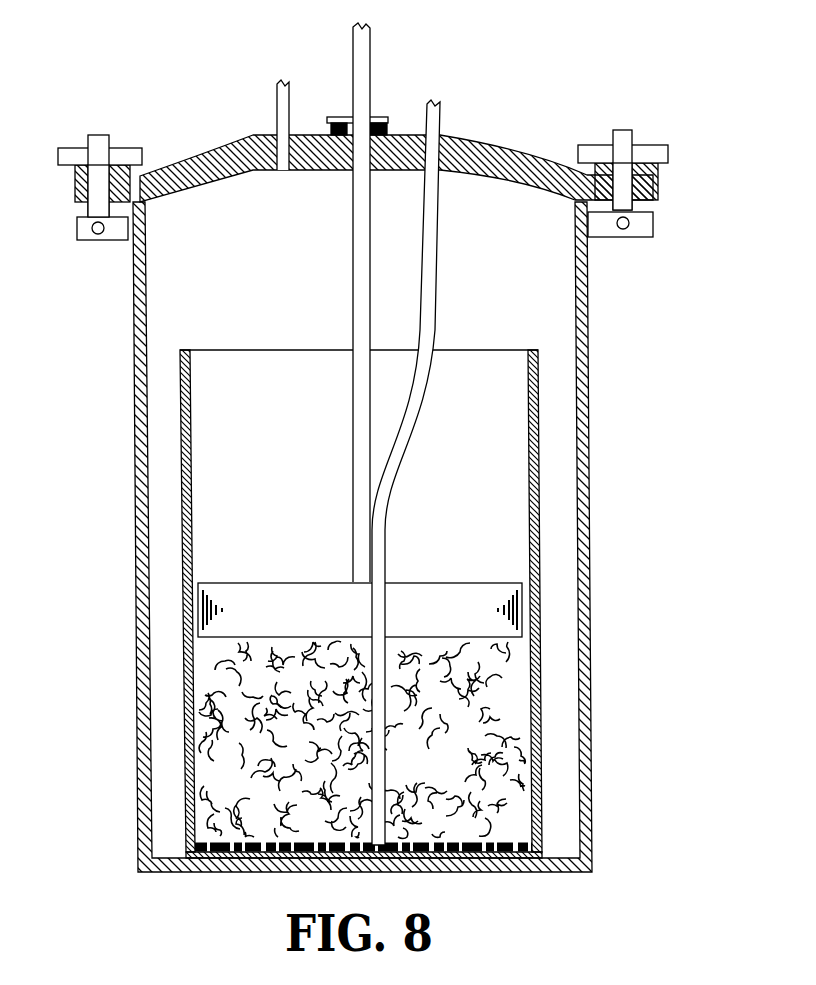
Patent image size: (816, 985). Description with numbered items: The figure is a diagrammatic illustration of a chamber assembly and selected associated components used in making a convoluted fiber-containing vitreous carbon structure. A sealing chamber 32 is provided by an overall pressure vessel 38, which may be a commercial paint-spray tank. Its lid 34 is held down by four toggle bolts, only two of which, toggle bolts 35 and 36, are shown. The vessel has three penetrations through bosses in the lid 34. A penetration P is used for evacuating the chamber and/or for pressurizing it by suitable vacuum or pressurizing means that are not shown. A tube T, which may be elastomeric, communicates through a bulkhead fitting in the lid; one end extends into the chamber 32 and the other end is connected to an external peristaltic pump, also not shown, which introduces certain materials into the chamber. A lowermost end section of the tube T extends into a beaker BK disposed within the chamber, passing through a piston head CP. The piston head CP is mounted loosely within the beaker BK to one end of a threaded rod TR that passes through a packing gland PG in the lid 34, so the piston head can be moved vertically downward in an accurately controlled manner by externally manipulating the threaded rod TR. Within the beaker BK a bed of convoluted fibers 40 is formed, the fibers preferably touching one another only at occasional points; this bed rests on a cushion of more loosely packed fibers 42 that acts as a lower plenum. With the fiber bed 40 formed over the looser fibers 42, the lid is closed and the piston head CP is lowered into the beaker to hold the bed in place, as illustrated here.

The chamber 32 is at (487, 477).
The lid 34 is at (536, 128).
The toggle bolt 35 is at (130, 148).
The toggle bolt 36 is at (657, 145).
The pressure vessel 38 is at (614, 331).
The fiber bed 40 is at (480, 720).
The loosely packed fibers 42 is at (471, 860).
The threaded rod TR is at (380, 302).
The penetration P is at (271, 125).
The packing gland PG is at (366, 112).
The tube T is at (417, 472).
The beaker BK is at (214, 455).
The piston head CP is at (360, 610).